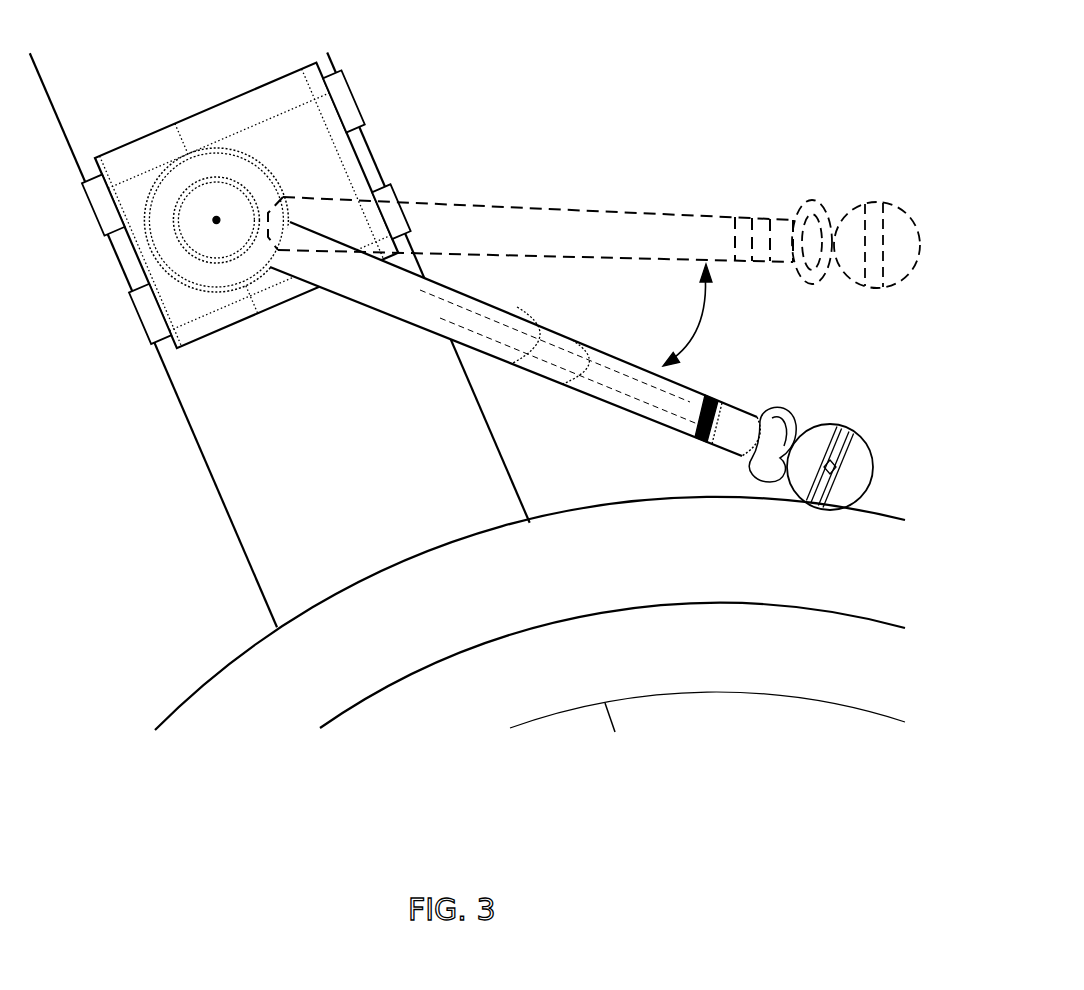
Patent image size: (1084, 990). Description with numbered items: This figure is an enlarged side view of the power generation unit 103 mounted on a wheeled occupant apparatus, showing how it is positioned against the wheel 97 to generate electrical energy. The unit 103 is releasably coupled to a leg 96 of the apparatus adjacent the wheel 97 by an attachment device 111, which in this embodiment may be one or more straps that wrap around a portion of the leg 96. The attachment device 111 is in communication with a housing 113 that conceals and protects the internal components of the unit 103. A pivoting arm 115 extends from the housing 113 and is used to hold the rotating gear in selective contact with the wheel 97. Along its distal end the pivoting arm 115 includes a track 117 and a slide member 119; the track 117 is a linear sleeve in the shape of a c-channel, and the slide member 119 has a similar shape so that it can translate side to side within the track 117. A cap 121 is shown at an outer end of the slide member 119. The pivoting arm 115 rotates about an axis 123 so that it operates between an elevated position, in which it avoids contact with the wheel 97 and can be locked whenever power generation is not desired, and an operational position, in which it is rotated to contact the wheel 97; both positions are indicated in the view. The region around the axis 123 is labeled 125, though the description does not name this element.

The leg 96 is at (205, 465).
The wheel 97 is at (198, 688).
The power generation unit 103 is at (460, 86).
The attachment device 111 is at (352, 78).
The housing 113 is at (230, 98).
The pivoting arm 115 is at (534, 321).
The track 117 is at (787, 404).
The slide member 119 is at (758, 458).
The cap 121 is at (850, 474).
The axis 123 is at (218, 219).
The pivot ring 125 is at (177, 187).